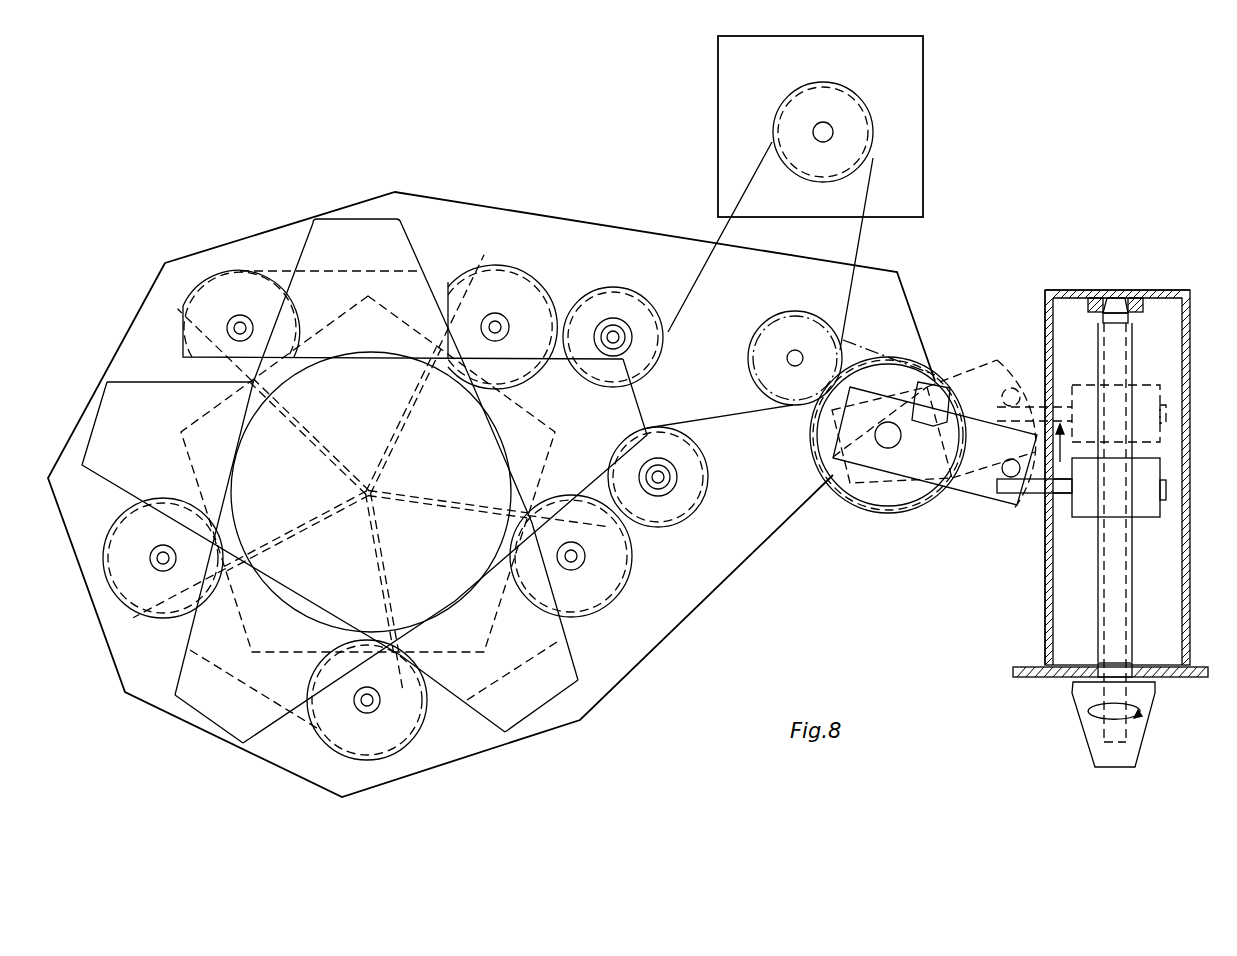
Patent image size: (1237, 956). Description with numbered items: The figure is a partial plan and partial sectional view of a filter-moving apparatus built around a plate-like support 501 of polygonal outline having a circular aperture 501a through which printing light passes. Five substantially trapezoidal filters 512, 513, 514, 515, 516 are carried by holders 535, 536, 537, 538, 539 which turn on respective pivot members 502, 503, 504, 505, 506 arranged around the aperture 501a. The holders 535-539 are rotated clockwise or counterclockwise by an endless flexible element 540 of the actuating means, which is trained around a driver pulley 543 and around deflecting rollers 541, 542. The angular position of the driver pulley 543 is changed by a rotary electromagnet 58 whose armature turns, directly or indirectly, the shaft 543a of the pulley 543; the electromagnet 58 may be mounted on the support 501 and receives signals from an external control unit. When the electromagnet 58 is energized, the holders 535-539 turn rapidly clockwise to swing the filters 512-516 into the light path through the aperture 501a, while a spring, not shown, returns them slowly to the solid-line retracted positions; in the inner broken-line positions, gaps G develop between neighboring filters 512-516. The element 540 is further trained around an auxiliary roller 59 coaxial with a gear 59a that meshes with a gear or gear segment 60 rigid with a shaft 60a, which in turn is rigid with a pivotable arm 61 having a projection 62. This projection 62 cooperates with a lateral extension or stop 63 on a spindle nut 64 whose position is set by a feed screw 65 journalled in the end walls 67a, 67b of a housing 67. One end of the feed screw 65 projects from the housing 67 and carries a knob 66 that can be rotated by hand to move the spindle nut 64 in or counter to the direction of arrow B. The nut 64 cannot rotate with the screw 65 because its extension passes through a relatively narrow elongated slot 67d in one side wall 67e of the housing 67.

The plate-like support 501 is at (505, 217).
The circular aperture 501a is at (345, 370).
The pivot member 502 is at (508, 324).
The pivot member 503 is at (576, 564).
The pivot member 504 is at (356, 708).
The pivot member 505 is at (150, 567).
The pivot member 506 is at (242, 313).
The filter 512 is at (410, 218).
The filter 513 is at (632, 412).
The filter 514 is at (568, 662).
The filter 515 is at (200, 706).
The filter 516 is at (112, 382).
The holder 535 is at (518, 284).
The holder 536 is at (623, 556).
The holder 537 is at (423, 716).
The holder 538 is at (152, 624).
The holder 539 is at (211, 288).
The endless flexible element 540 is at (714, 224).
The deflecting roller 541 is at (654, 336).
The deflecting roller 542 is at (705, 482).
The driver pulley 543 is at (784, 114).
The shaft 543a is at (828, 131).
The rotary electromagnet 58 is at (923, 86).
The auxiliary roller 59 is at (804, 332).
The gear 59a is at (844, 354).
The gear segment 60 is at (896, 504).
The shaft 60a is at (923, 392).
The pivotable arm 61 is at (978, 501).
The projection 62 is at (1026, 500).
The stop 63 is at (1062, 510).
The spindle nut 64 is at (1140, 517).
The feed screw 65 is at (1116, 599).
The knob 66 is at (1094, 754).
The housing 67 is at (1130, 292).
The end wall 67a is at (1081, 293).
The end wall 67b is at (1161, 676).
The elongated slot 67d is at (991, 433).
The side wall 67e is at (1044, 333).
The arrow B is at (1066, 454).
The gap G is at (318, 530).